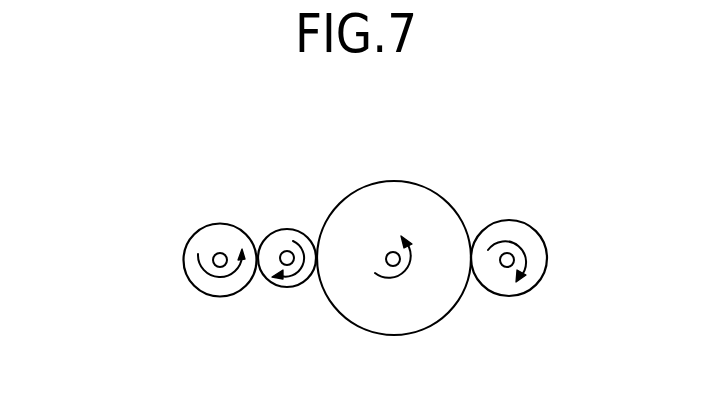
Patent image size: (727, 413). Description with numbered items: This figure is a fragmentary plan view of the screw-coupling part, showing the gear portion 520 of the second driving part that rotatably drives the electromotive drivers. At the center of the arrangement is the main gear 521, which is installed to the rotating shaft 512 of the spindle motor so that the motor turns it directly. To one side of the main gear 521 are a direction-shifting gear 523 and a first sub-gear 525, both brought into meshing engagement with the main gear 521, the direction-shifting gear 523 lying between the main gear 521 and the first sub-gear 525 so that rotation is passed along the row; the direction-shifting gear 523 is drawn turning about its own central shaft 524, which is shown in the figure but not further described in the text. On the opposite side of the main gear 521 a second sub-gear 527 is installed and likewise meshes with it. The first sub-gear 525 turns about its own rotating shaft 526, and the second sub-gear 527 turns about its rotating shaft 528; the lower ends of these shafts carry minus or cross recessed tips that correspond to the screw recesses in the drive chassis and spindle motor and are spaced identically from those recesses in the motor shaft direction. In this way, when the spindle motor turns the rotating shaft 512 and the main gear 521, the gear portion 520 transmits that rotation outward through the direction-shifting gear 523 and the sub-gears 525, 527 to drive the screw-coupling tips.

The gear portion 520 is at (143, 198).
The main gear 521 is at (400, 185).
The rotating shaft 512 is at (393, 266).
The direction-shifting gear 523 is at (287, 287).
The second roller shaft 524 is at (284, 251).
The first sub-gear 525 is at (213, 295).
The rotating shaft 526 is at (220, 253).
The second sub-gear 527 is at (512, 221).
The rotating shaft 528 is at (514, 259).